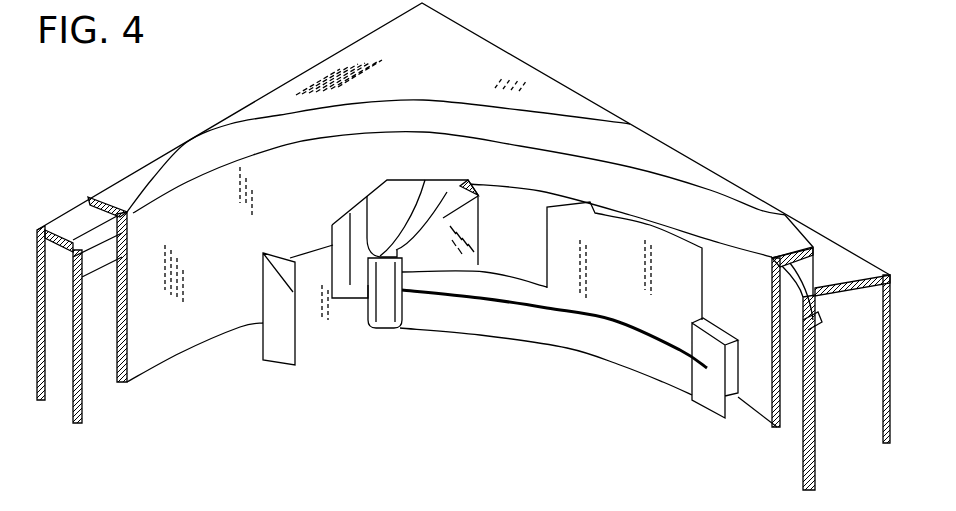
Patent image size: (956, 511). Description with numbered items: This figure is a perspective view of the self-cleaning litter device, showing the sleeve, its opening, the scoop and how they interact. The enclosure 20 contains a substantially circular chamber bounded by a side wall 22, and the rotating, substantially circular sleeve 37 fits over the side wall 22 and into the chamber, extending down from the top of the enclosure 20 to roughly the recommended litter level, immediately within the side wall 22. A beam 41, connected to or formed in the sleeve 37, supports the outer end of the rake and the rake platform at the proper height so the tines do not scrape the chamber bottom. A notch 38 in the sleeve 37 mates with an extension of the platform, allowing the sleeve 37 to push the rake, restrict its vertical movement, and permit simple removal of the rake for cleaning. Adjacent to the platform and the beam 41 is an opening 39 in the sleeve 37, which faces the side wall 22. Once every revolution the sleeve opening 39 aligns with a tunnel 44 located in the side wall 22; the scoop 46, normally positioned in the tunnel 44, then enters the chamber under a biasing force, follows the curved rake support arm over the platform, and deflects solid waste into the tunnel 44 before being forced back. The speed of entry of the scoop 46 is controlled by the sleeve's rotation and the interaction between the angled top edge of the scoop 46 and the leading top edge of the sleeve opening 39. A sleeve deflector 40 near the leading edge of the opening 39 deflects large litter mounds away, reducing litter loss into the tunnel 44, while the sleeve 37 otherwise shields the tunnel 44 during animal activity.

The enclosure 20 is at (482, 63).
The sleeve 37 is at (705, 180).
The sleeve opening 39 is at (340, 222).
The tunnel 44 is at (527, 245).
The sleeve deflector 40 is at (272, 347).
The scoop 46 is at (380, 320).
The beam 41 is at (445, 315).
The side wall 22 is at (610, 278).
The notch 38 is at (697, 367).